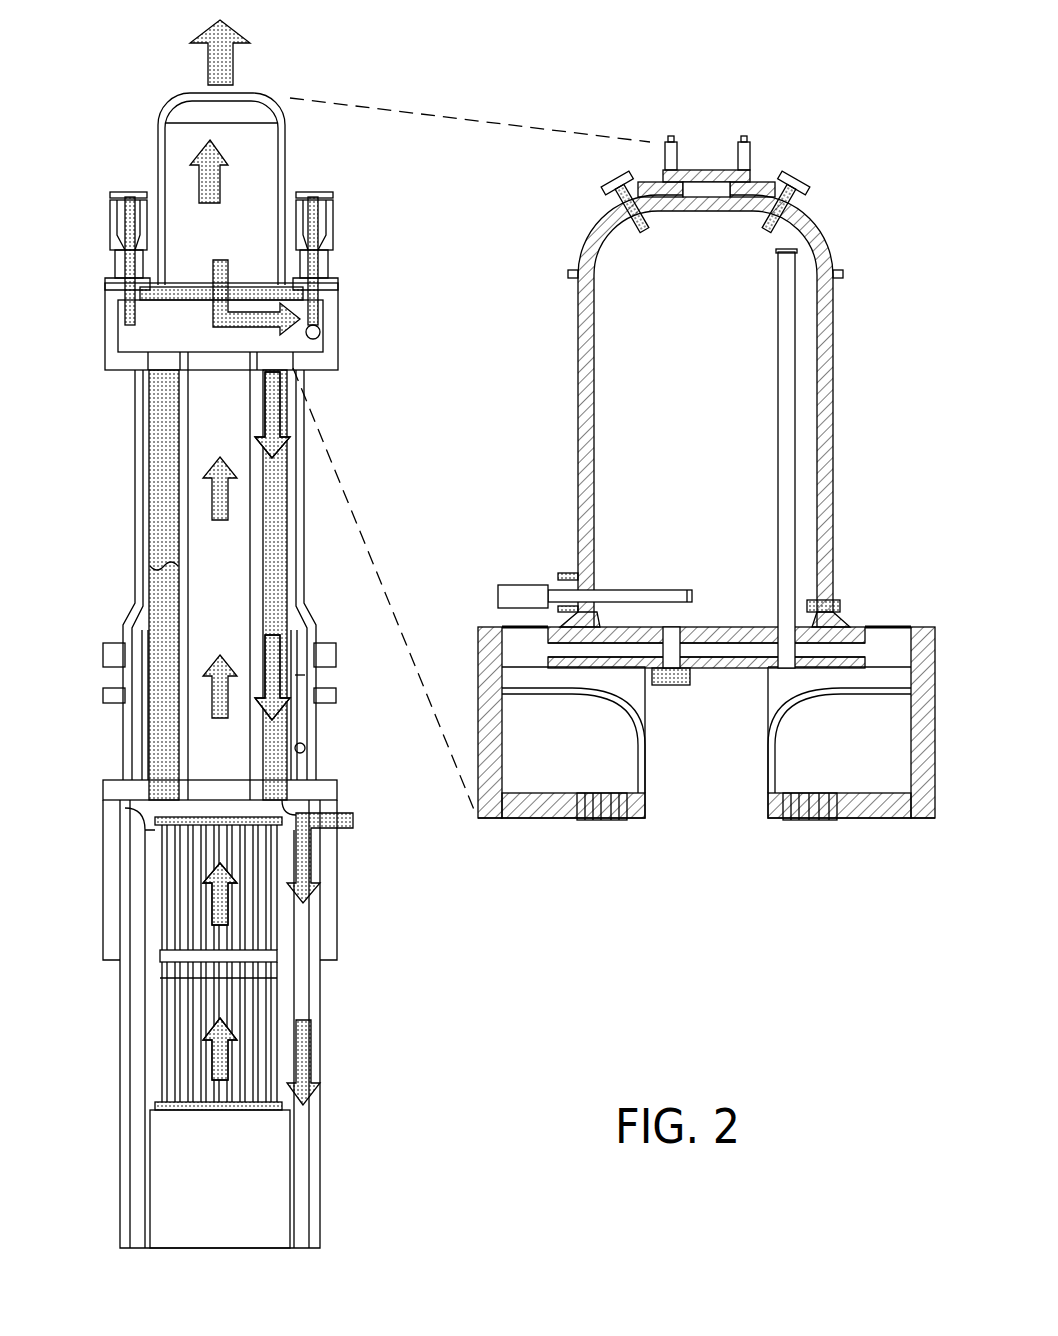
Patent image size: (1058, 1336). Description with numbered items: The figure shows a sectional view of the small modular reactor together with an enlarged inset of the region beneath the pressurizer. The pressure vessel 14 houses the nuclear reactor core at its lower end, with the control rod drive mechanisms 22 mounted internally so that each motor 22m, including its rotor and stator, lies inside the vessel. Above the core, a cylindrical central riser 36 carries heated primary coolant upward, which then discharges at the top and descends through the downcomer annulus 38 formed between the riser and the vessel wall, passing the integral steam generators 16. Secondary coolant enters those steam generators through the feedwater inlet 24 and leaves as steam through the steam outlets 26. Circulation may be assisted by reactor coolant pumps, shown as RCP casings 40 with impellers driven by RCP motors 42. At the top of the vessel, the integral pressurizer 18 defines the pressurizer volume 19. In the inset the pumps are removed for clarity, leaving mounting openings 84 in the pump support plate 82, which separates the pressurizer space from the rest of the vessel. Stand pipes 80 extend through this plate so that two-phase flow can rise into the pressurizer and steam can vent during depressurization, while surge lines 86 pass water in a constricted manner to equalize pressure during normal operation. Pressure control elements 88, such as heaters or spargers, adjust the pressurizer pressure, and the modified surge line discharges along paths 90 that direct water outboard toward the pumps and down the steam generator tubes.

The pressure vessel 14 is at (137, 512).
The integral steam generators 16 is at (160, 450).
The integral pressurizer 18 is at (157, 140).
The integral pressurizer volume 19 is at (180, 178).
The control rod drive mechanisms 22 is at (170, 885).
The motor 22m is at (185, 1023).
The feedwater inlet 24 is at (105, 697).
The steam outlets 26 is at (105, 655).
The central riser 36 is at (205, 740).
The downcomer annulus 38 is at (165, 568).
The RCP casings 40 is at (128, 308).
The RCP motors 42 is at (128, 224).
The stand pipes 80 is at (778, 310).
The pump support plate 82 is at (752, 627).
The mounting openings 84 is at (525, 622).
The surge lines 86 is at (682, 680).
The pressure control elements 88 is at (610, 596).
The modified surge line paths 90 is at (622, 655).